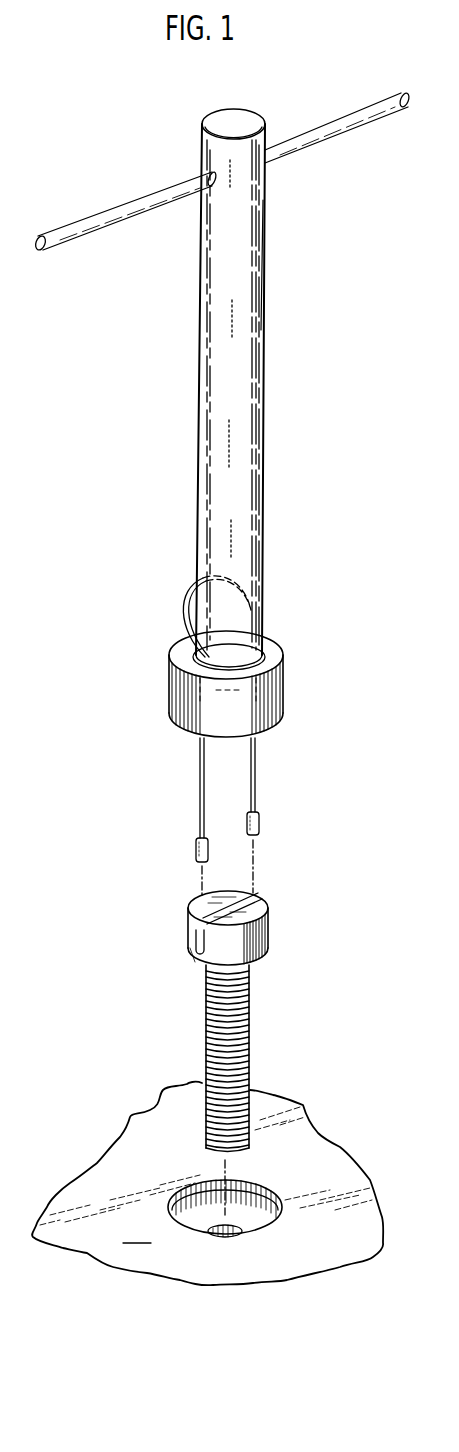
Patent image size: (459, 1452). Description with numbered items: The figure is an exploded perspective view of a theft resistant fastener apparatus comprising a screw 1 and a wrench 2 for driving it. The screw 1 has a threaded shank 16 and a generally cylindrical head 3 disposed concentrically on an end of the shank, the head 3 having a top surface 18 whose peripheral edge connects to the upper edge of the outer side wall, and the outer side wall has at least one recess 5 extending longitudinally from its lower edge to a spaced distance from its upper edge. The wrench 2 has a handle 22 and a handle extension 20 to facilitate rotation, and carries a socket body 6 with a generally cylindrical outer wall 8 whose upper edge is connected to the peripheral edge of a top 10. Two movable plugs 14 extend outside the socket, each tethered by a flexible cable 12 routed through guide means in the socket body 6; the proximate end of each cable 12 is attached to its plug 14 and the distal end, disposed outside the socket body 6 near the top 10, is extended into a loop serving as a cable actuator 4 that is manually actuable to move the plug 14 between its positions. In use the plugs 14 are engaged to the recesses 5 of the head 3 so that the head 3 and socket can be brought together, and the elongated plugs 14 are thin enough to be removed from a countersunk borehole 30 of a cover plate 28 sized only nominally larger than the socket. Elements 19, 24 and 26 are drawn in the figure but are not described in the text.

The screw 1 is at (223, 1035).
The wrench 2 is at (272, 376).
The generally cylindrical head 3 is at (223, 910).
The cable actuator 4 is at (190, 598).
The recess 5 is at (337, 665).
The socket body 6 is at (247, 811).
The outer wall 8 is at (292, 662).
The top 10 is at (281, 648).
The flexible cable 12 is at (200, 780).
The movable plug 14 is at (195, 849).
The threaded shank 16 is at (250, 1058).
The top surface 18 is at (252, 906).
The side notch 19 is at (190, 930).
The handle extension 20 is at (317, 127).
The handle 22 is at (267, 262).
The bore hole 24 is at (242, 1221).
The recess wall 26 is at (283, 1200).
The cover plate 28 is at (207, 1183).
The countersunk borehole 30 is at (266, 1187).